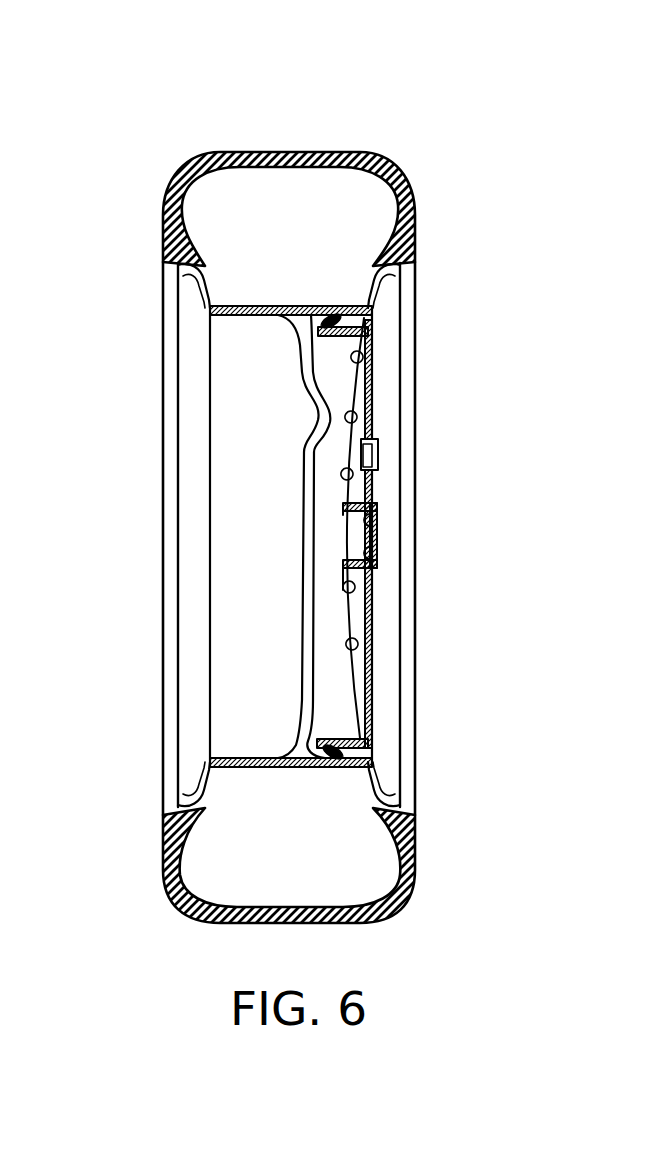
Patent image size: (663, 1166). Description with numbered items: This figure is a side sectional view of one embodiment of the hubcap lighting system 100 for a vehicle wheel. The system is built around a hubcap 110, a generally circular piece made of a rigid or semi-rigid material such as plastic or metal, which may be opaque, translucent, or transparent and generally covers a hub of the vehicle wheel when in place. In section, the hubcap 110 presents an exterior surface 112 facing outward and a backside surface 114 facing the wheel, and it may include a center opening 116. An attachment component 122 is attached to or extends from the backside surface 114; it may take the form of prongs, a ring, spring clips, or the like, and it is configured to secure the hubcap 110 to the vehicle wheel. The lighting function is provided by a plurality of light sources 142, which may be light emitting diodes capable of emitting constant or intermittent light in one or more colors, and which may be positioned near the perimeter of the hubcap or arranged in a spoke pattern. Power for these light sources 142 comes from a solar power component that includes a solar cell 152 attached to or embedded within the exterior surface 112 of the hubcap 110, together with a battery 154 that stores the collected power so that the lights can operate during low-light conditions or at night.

The hubcap lighting system 100 is at (463, 107).
The hubcap 110 is at (383, 347).
The exterior surface 112 is at (372, 405).
The backside surface 114 is at (350, 623).
The center opening 116 is at (350, 542).
The attachment component 122 is at (343, 325).
The light sources 142 is at (362, 522).
The solar cell 152 is at (378, 454).
The battery 154 is at (362, 454).